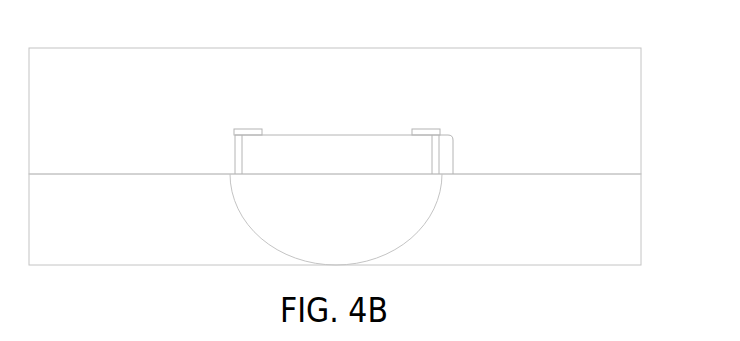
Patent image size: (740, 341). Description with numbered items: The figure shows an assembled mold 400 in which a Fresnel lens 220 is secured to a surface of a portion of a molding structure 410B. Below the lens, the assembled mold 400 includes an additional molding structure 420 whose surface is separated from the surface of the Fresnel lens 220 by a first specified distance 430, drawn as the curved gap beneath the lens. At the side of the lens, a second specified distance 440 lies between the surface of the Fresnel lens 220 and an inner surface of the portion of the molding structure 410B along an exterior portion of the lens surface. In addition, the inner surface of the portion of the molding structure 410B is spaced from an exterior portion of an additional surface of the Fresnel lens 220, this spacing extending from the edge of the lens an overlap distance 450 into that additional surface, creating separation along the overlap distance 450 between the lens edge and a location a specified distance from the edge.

The assembled mold 400 is at (569, 16).
The portion of a molding structure 410B is at (96, 93).
The additional molding structure 420 is at (98, 216).
The Fresnel lens 220 is at (355, 169).
The first specified distance 430 is at (335, 175).
The second specified distance 440 is at (455, 135).
The overlap distance 450 is at (262, 131).